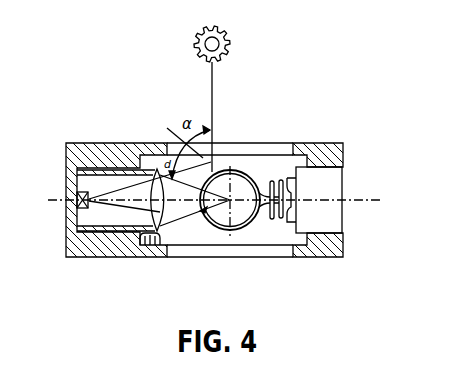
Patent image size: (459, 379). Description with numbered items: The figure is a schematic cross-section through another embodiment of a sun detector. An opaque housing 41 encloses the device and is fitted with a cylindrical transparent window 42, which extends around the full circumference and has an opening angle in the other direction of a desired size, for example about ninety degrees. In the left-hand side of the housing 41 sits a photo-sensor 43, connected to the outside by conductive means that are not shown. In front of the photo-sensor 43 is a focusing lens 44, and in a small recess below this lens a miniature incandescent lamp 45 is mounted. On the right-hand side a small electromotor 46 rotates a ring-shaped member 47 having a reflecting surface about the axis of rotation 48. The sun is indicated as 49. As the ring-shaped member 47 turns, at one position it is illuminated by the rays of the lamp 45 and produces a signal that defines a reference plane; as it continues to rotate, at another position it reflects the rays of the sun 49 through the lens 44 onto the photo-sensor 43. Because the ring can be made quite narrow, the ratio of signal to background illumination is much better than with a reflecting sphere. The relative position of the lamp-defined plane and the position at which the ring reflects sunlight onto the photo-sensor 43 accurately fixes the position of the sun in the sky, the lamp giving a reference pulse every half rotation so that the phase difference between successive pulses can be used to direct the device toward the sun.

The housing 41 is at (80, 152).
The cylindrical transparent window 42 is at (252, 153).
The photo-sensor 43 is at (77, 196).
The focusing lens 44 is at (164, 219).
The miniature incandescent lamp 45 is at (153, 246).
The electromotor 46 is at (335, 189).
The ring-shaped member 47 is at (231, 228).
The axis of rotation 48 is at (276, 211).
The sun 49 is at (196, 50).